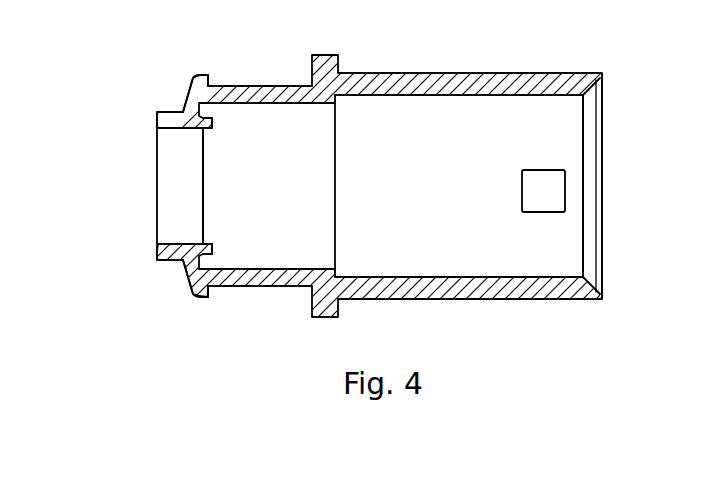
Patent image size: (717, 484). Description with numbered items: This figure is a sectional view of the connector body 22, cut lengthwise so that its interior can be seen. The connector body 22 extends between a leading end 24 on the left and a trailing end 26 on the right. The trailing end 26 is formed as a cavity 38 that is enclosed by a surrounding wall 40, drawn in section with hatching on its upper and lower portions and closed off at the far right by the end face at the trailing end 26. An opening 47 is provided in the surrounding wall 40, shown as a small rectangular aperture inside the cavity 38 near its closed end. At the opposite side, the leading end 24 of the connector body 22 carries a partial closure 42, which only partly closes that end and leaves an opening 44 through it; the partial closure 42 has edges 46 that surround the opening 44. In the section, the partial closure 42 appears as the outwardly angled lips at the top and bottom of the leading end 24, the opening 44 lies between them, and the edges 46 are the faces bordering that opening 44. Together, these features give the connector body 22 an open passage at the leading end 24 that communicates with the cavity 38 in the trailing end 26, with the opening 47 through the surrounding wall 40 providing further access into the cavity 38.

The connector body 22 is at (252, 345).
The leading end 24 is at (157, 183).
The trailing end 26 is at (602, 180).
The cavity 38 is at (460, 187).
The surrounding wall 40 is at (485, 74).
The partial closure 42 is at (172, 112).
The opening 44 is at (173, 200).
The edges 46 is at (182, 130).
The opening 47 is at (545, 193).